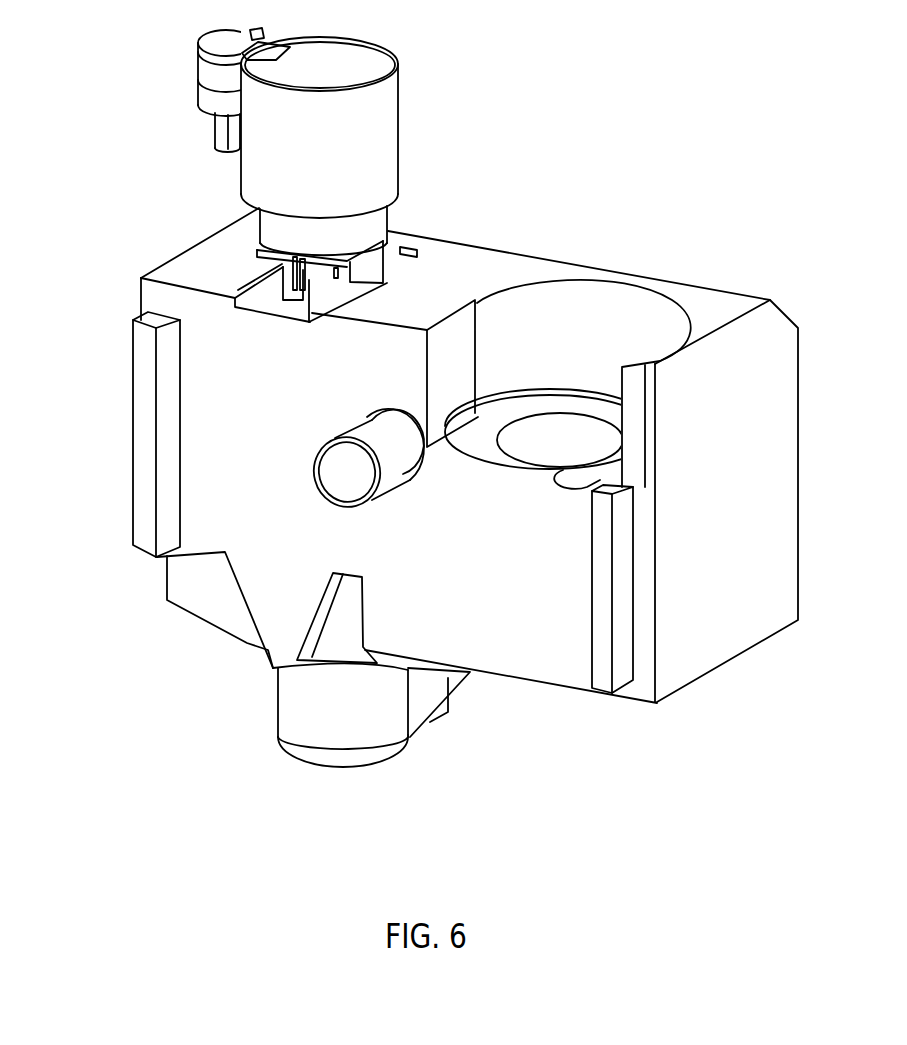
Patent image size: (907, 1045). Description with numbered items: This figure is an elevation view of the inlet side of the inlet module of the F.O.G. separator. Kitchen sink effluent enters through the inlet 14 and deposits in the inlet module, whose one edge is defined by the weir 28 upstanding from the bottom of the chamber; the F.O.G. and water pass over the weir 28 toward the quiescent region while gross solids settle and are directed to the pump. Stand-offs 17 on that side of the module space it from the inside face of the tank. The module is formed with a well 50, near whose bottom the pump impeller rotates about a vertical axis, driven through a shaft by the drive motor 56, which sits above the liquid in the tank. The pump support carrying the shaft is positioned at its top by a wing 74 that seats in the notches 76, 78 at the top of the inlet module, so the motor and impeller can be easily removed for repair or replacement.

The inlet 14 is at (370, 433).
The stand-offs 17 is at (147, 545).
The weir 28 is at (580, 486).
The well 50 is at (333, 748).
The drive motor 56 is at (332, 169).
The wing 74 is at (370, 265).
The notch 76 is at (270, 267).
The notch 78 is at (380, 282).